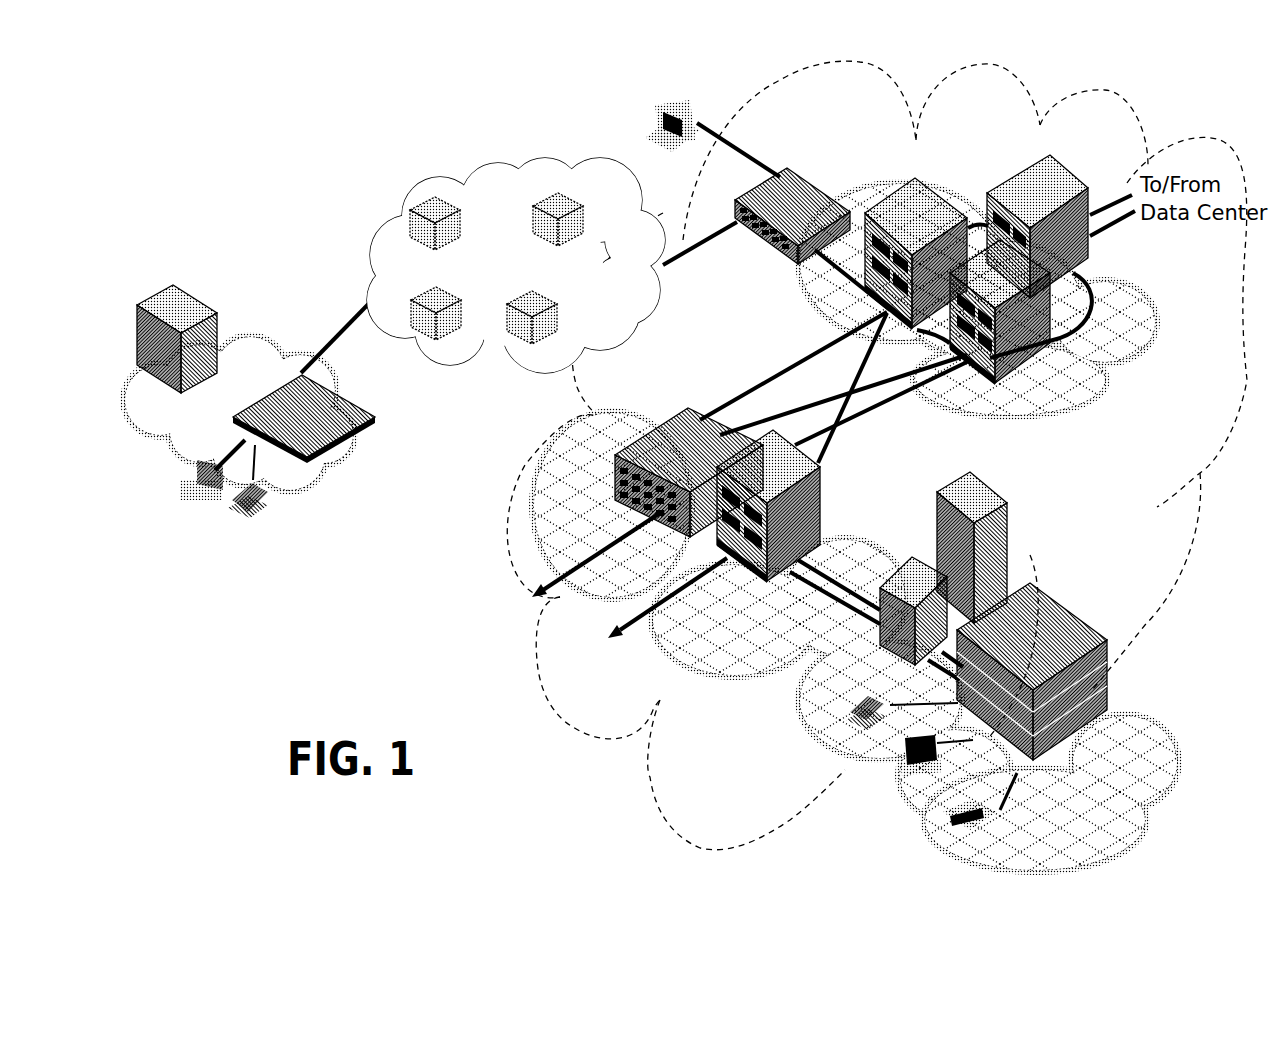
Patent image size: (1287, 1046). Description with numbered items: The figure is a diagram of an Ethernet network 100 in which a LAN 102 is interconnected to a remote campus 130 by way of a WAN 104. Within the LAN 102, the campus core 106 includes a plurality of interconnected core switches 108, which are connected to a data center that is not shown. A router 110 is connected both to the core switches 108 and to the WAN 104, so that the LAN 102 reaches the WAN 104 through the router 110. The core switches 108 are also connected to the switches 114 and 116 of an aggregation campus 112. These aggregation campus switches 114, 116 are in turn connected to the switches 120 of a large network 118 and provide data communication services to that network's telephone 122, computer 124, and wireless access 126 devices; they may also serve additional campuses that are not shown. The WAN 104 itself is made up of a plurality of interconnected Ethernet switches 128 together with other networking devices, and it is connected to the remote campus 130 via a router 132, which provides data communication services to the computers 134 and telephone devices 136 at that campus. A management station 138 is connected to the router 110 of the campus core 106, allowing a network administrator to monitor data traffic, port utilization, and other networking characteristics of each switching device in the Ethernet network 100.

The Ethernet network 100 is at (1212, 106).
The LAN 102 is at (680, 843).
The WAN 104 is at (443, 177).
The campus core 106 is at (1155, 330).
The core switches 108 is at (923, 183).
The router 110 is at (810, 183).
The aggregation campus 112 is at (858, 550).
The switch 114 is at (706, 397).
The switch 116 is at (815, 513).
The large network 118 is at (1158, 812).
The switches 120 is at (1048, 592).
The telephone 122 is at (843, 727).
The computer 124 is at (882, 757).
The wireless access device 126 is at (980, 815).
The Ethernet switches 128 is at (452, 212).
The remote campus 130 is at (333, 457).
The router 132 is at (312, 372).
The computers 134 is at (190, 490).
The telephone devices 136 is at (253, 505).
The management station 138 is at (712, 100).